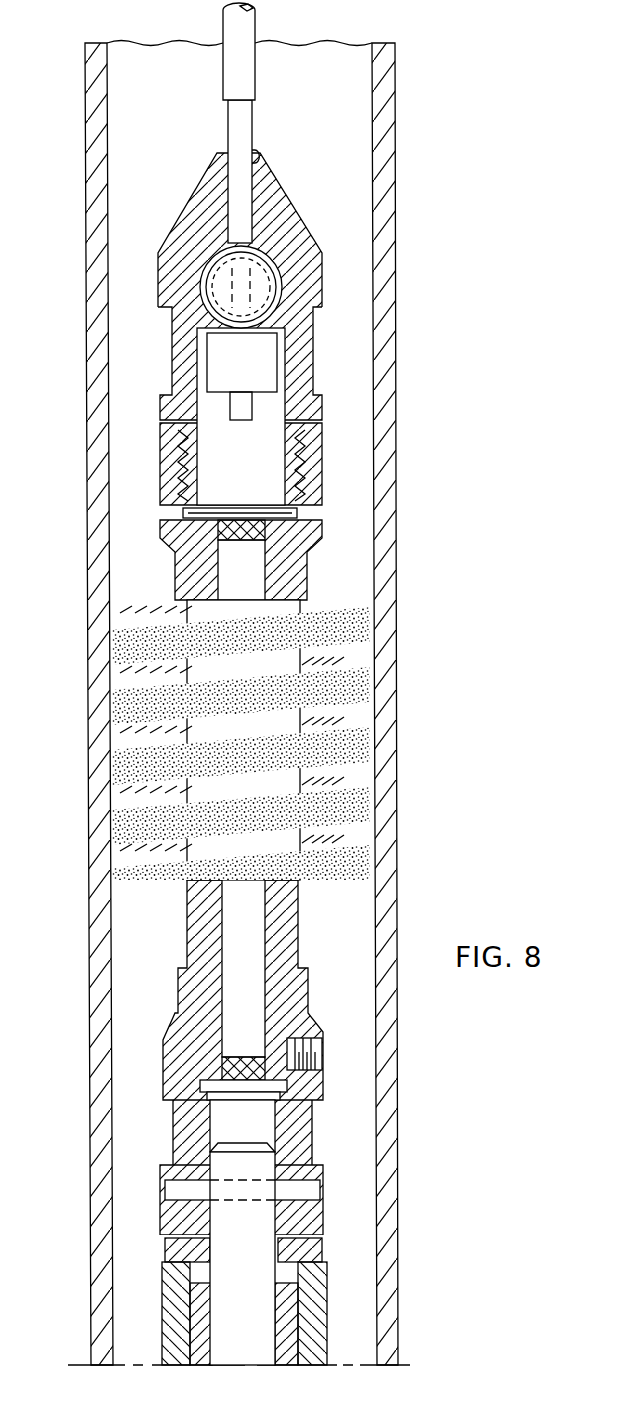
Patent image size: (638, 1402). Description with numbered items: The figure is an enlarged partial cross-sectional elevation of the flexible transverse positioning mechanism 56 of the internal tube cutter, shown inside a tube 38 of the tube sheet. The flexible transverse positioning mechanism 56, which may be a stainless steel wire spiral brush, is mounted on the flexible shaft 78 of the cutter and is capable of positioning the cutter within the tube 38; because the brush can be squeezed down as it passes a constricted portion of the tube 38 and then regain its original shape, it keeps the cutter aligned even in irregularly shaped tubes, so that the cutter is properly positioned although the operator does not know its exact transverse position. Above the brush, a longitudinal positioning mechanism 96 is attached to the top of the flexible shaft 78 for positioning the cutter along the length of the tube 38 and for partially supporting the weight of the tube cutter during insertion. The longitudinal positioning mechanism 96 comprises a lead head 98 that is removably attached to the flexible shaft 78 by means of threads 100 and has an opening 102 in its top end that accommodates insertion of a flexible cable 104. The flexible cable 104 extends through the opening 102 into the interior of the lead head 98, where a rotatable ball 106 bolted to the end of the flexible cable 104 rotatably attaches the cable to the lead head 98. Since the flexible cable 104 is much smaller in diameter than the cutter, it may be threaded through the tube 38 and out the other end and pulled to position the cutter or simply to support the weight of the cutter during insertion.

The tube 38 is at (385, 653).
The flexible transverse positioning mechanism 56 is at (373, 745).
The flexible shaft 78 is at (310, 516).
The longitudinal positioning mechanism 96 is at (316, 341).
The lead head 98 is at (315, 282).
The threads 100 is at (303, 465).
The opening 102 is at (252, 148).
The flexible cable 104 is at (243, 33).
The rotatable ball 106 is at (255, 272).